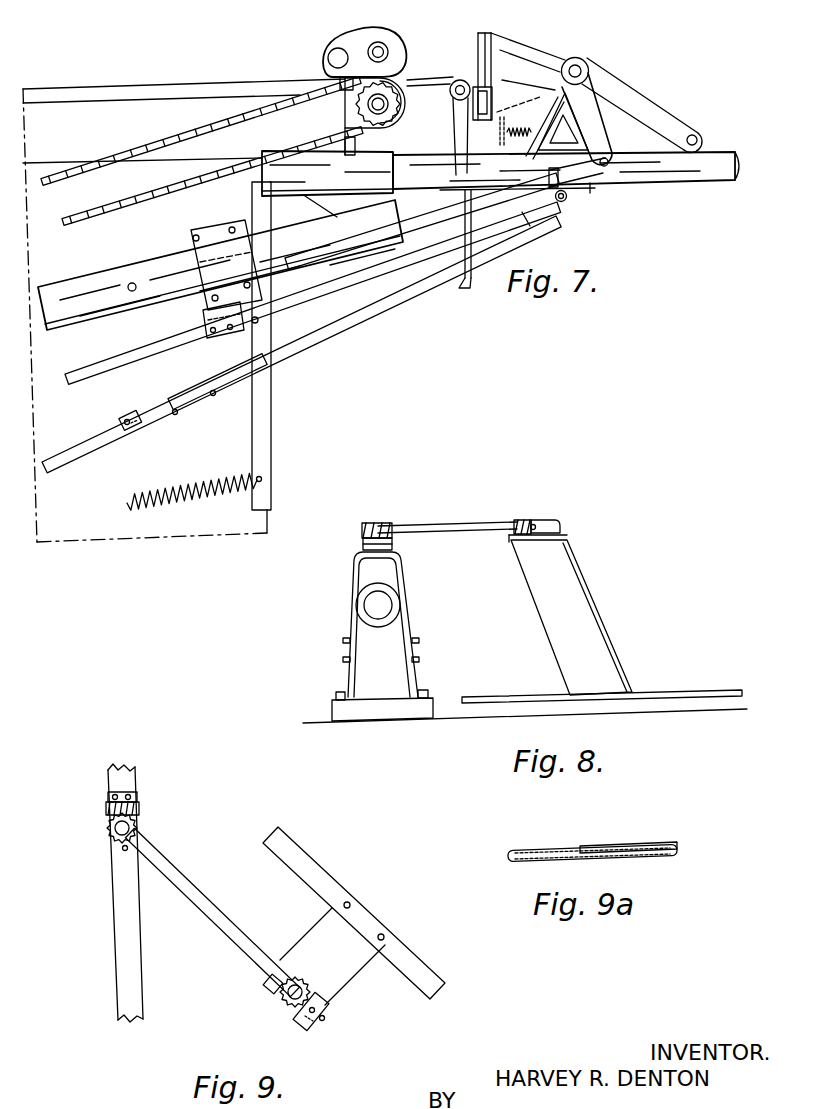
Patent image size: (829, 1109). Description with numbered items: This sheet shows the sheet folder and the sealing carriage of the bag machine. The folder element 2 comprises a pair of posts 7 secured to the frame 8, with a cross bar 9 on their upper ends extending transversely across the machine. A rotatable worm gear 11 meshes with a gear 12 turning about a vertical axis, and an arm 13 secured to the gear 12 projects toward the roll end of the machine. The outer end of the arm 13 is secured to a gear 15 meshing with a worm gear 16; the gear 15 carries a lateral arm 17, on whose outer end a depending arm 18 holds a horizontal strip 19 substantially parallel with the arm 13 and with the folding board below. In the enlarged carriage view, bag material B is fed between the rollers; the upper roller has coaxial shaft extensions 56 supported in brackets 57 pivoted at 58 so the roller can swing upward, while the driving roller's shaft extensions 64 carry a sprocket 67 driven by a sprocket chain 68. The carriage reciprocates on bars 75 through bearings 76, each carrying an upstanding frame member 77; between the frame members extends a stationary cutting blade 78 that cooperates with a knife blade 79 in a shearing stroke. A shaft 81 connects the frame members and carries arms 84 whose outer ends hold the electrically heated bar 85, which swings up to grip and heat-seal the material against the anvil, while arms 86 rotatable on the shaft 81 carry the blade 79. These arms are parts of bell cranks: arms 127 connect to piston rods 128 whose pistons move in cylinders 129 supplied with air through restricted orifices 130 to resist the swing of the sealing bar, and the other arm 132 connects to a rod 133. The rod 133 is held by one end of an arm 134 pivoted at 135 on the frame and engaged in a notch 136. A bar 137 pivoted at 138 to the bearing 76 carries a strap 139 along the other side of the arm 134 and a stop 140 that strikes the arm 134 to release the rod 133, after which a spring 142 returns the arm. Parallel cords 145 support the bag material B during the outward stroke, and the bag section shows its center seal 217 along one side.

In FIG. 8, the folding seat assembly 2 is at (460, 483).
In FIG. 9, the folding seat assembly 2 is at (223, 757).
In FIG. 8, the posts 7 is at (393, 635).
In FIG. 7, the frame 8 is at (116, 540).
In FIG. 8, the cross bar 9 is at (394, 545).
In FIG. 9, the cross bar 9 is at (135, 918).
In FIG. 9, the worm gear 11 is at (138, 800).
In FIG. 8, the gear 12 is at (360, 536).
In FIG. 9, the gear 12 is at (138, 821).
In FIG. 8, the arm 13 is at (470, 526).
In FIG. 9, the arm 13 is at (220, 917).
In FIG. 8, the gear 15 is at (521, 519).
In FIG. 9, the gear 15 is at (281, 1003).
In FIG. 9, the worm gear 16 is at (298, 1014).
In FIG. 8, the arm 17 is at (563, 530).
In FIG. 9, the arm 17 is at (285, 967).
In FIG. 8, the depending arm 18 is at (587, 606).
In FIG. 9, the depending arm 18 is at (359, 967).
In FIG. 8, the strip 19 is at (690, 690).
In FIG. 9, the strip 19 is at (313, 867).
In FIG. 7, the shaft extensions 56 is at (390, 52).
In FIG. 7, the brackets 57 is at (352, 42).
In FIG. 7, the pivot 58 is at (328, 58).
In FIG. 7, the shaft extensions 64 is at (366, 105).
In FIG. 7, the sprocket 67 is at (394, 111).
In FIG. 7, the sprocket chain 68 is at (247, 120).
In FIG. 7, the bars 75 is at (428, 162).
In FIG. 7, the bearings 76 is at (592, 191).
In FIG. 7, the frame member 77 is at (517, 31).
In FIG. 7, the cutting blade 78 is at (492, 63).
In FIG. 7, the knife blade 79 is at (518, 115).
In FIG. 7, the shaft 81 is at (584, 64).
In FIG. 7, the arms 84 is at (537, 77).
In FIG. 7, the heating bar 85 is at (469, 84).
In FIG. 7, the arms 86 is at (560, 96).
In FIG. 7, the bag material B is at (445, 80).
In FIG. 7, the bell crank arms 127 is at (587, 107).
In FIG. 7, the piston rods 128 is at (422, 214).
In FIG. 7, the cylinders 129 is at (348, 250).
In FIG. 7, the restricted orifice 130 is at (132, 292).
In FIG. 7, the bell crank arm 132 is at (660, 107).
In FIG. 7, the rod 133 is at (672, 143).
In FIG. 7, the arm 134 is at (266, 420).
In FIG. 7, the pivot 135 is at (258, 320).
In FIG. 7, the notch 136 is at (205, 328).
In FIG. 7, the bar 137 is at (366, 303).
In FIG. 7, the pivot 138 is at (562, 203).
In FIG. 7, the strap 139 is at (166, 404).
In FIG. 7, the stop 140 is at (140, 409).
In FIG. 7, the spring 142 is at (212, 489).
In FIG. 7, the cords 145 is at (436, 86).
In FIG. 9A, the center seal 217 is at (590, 845).